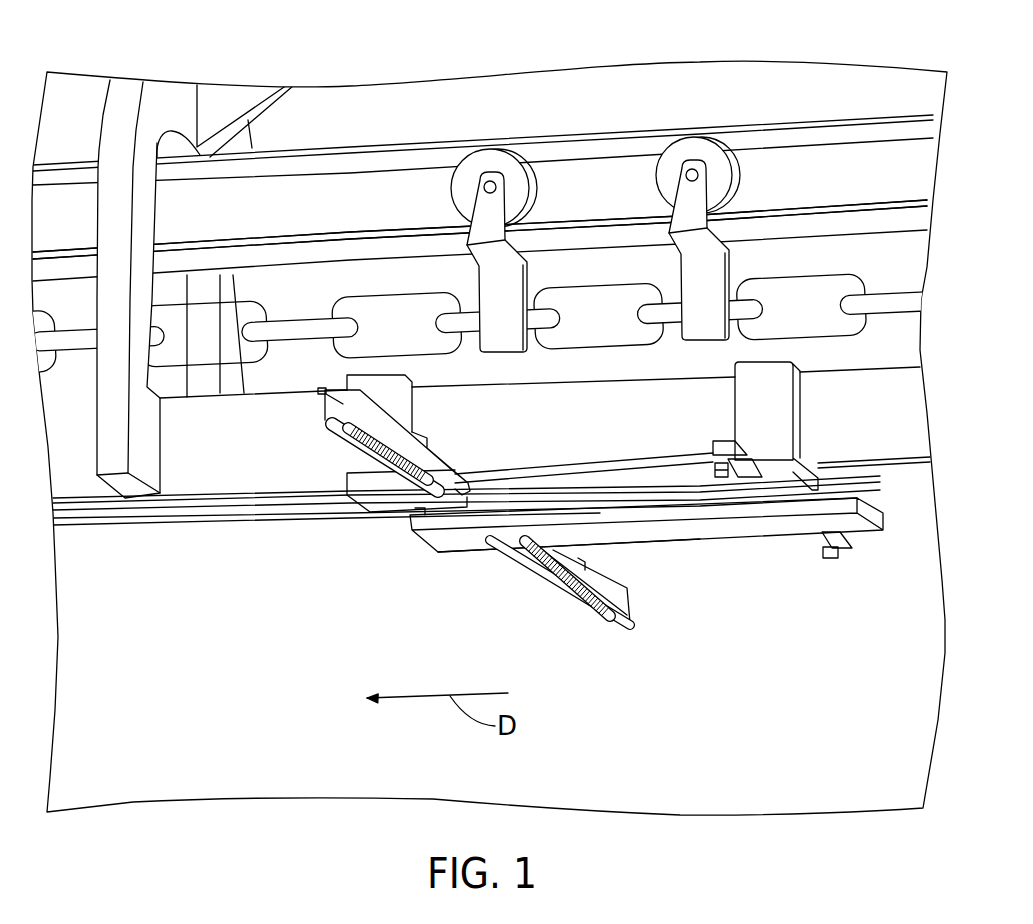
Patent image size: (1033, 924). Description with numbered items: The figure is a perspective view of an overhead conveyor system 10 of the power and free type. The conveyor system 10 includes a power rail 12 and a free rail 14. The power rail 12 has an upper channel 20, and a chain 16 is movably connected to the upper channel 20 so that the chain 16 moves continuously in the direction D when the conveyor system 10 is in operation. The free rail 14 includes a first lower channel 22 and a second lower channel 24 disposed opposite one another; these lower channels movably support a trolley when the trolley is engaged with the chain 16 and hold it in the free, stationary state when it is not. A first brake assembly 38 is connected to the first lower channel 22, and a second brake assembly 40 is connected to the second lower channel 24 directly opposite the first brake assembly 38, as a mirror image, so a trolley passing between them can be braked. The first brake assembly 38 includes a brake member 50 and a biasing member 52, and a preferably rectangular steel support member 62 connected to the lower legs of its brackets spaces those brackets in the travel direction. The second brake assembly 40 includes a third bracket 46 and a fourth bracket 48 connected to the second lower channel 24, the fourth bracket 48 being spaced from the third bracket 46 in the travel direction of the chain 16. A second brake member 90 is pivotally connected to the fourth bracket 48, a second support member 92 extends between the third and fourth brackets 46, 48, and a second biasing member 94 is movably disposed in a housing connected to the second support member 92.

The overhead conveyor system 10 is at (660, 97).
The power rail 12 is at (388, 143).
The free rail 14 is at (110, 532).
The chain 16 is at (820, 283).
The upper channel 20 is at (585, 131).
The first lower channel 22 is at (313, 507).
The second lower channel 24 is at (255, 467).
The first brake assembly 38 is at (728, 560).
The second brake assembly 40 is at (586, 453).
The third bracket 46 is at (415, 408).
The fourth bracket 48 is at (801, 417).
The brake member 50 is at (676, 560).
The biasing member 52 is at (564, 595).
The support member 62 is at (788, 528).
The second brake member 90 is at (650, 452).
The second support member 92 is at (383, 497).
The second biasing member 94 is at (371, 449).